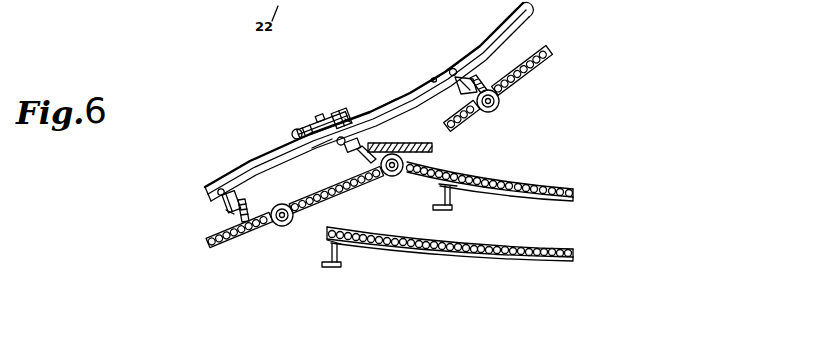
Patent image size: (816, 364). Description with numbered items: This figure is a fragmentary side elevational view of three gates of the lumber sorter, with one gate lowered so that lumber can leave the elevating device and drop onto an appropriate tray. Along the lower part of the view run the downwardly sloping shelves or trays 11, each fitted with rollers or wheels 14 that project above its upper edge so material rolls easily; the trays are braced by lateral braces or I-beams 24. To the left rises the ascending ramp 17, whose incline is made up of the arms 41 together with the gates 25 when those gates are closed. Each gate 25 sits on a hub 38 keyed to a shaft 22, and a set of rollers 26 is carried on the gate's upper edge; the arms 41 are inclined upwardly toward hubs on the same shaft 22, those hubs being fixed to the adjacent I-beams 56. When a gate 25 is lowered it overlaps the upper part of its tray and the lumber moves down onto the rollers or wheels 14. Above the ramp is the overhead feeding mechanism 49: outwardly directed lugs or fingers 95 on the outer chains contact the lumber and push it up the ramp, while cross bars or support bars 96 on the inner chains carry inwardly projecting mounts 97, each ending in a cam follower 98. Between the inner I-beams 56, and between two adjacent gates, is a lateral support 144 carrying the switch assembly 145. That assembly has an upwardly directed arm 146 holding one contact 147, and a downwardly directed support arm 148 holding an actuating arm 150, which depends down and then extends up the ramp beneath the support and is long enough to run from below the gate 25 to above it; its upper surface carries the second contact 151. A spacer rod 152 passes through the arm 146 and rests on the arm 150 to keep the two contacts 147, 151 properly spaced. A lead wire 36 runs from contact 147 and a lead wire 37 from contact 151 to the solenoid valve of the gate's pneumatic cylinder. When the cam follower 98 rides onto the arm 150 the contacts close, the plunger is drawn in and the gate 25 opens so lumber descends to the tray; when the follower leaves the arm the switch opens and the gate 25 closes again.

The shelves or trays 11 is at (473, 255).
The rollers or wheels 14 is at (441, 246).
The ascending ramp 17 is at (238, 246).
The shafts 22 is at (285, 226).
The lateral braces or I-beams 24 is at (450, 204).
The gate 25 is at (340, 194).
The rollers 26 is at (437, 166).
The lead wire 36 is at (345, 121).
The lead wire 37 is at (345, 130).
The hub 38 is at (278, 224).
The arms 41 is at (462, 125).
The feeding mechanism 49 is at (242, 170).
The I-beams 56 is at (445, 71).
The lugs or fingers 95 is at (246, 203).
The cross bars or support bars 96 is at (228, 208).
The mounts 97 is at (219, 205).
The cam follower 98 is at (209, 190).
The lateral support 144 is at (320, 126).
The switch assembly 145 is at (303, 122).
The upwardly directed arm 146 is at (352, 123).
The contact 147 is at (335, 121).
The support arm 148 is at (293, 131).
The actuating arm 150 is at (388, 103).
The contact 151 is at (332, 148).
The spacer rod 152 is at (325, 119).